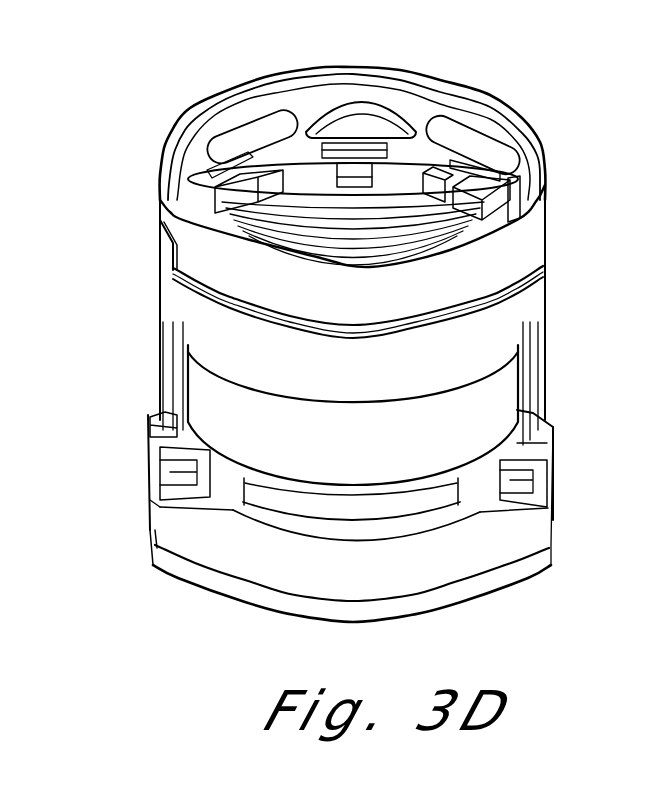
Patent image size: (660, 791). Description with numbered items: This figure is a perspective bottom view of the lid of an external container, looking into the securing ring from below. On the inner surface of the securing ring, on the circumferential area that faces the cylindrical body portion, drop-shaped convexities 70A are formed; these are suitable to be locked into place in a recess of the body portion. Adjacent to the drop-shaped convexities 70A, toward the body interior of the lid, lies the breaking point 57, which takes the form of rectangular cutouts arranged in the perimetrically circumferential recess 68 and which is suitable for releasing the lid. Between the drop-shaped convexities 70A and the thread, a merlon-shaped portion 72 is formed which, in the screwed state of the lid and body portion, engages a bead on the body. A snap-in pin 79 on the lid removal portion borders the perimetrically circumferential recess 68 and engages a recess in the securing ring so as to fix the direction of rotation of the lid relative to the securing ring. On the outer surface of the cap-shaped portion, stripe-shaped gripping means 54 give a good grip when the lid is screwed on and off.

The drop-shaped convexities 70A is at (370, 118).
The breaking point 57 is at (478, 177).
The merlon-shaped portion 72 is at (210, 144).
The snap-in pin 79 is at (168, 248).
The perimetrically circumferential recess 68 is at (543, 272).
The stripe-shaped gripping means 54 is at (550, 425).